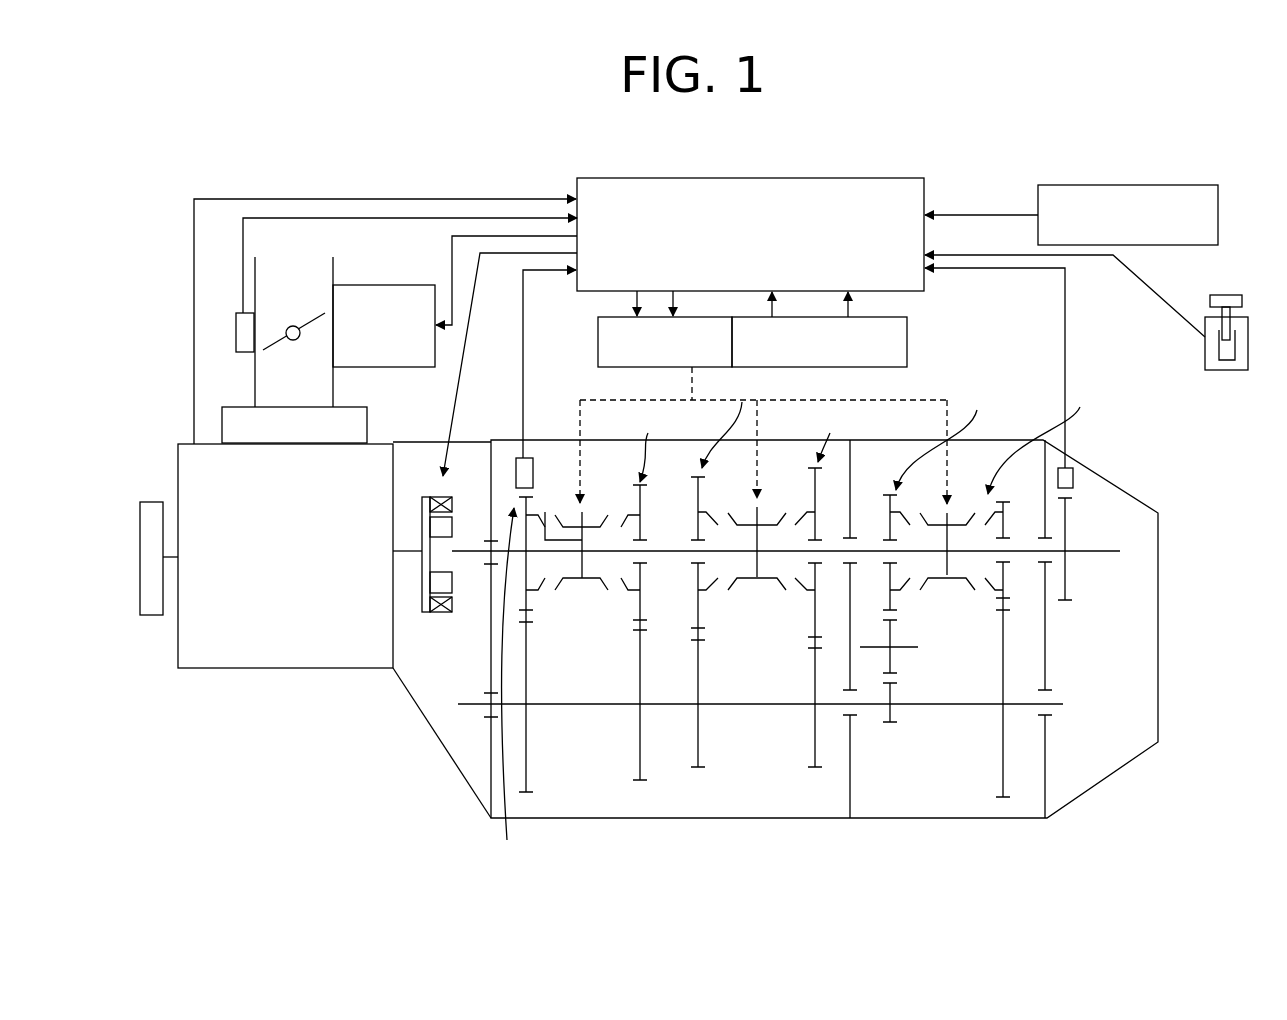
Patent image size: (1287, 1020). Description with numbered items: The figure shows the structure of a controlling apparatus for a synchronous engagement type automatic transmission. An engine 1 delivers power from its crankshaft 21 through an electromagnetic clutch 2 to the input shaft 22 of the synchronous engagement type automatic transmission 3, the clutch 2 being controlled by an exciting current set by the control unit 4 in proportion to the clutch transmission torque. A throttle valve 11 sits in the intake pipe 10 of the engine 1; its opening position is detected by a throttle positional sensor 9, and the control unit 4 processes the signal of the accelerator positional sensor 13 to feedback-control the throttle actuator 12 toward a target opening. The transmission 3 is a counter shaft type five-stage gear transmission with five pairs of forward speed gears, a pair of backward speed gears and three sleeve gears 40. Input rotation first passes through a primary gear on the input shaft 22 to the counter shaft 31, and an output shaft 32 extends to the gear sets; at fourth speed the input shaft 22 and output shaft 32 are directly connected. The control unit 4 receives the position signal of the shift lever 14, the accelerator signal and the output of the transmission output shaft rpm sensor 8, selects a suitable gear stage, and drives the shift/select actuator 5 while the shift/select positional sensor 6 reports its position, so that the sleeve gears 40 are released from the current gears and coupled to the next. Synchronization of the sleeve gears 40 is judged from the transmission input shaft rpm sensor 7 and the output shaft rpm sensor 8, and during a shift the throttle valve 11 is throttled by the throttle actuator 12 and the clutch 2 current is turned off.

The engine 1 is at (271, 670).
The electromagnetic clutch 2 is at (441, 613).
The synchronous engagement type automatic transmission 3 is at (877, 819).
The control unit 4 is at (777, 178).
The shift/select actuator 5 is at (598, 340).
The shift select positional sensor 6 is at (907, 335).
The transmission input shaft rpm sensor 7 is at (517, 457).
The transmission output shaft rpm sensor 8 is at (1068, 470).
The throttle positional sensor 9 is at (238, 313).
The intake pipe 10 is at (334, 268).
The throttle valve 11 is at (265, 345).
The throttle actuator 12 is at (400, 285).
The accelerator positional sensor 13 is at (1125, 185).
The shift lever 14 is at (1205, 355).
The crankshaft 21 is at (405, 548).
The input shaft 22 is at (468, 548).
The counter shaft 31 is at (575, 706).
The output shaft 32 is at (1093, 549).
The sleeve gears 40 is at (770, 510).